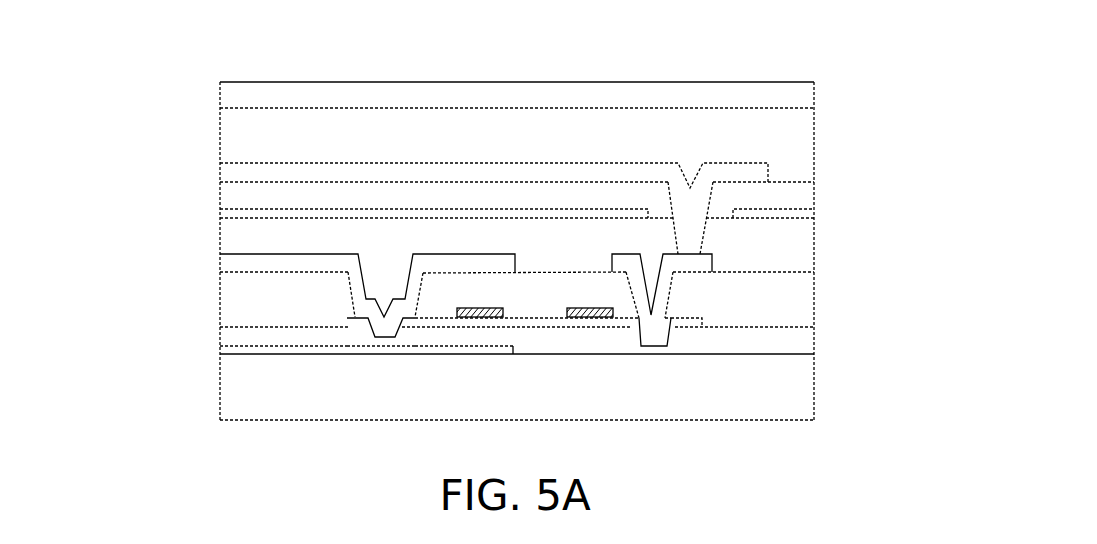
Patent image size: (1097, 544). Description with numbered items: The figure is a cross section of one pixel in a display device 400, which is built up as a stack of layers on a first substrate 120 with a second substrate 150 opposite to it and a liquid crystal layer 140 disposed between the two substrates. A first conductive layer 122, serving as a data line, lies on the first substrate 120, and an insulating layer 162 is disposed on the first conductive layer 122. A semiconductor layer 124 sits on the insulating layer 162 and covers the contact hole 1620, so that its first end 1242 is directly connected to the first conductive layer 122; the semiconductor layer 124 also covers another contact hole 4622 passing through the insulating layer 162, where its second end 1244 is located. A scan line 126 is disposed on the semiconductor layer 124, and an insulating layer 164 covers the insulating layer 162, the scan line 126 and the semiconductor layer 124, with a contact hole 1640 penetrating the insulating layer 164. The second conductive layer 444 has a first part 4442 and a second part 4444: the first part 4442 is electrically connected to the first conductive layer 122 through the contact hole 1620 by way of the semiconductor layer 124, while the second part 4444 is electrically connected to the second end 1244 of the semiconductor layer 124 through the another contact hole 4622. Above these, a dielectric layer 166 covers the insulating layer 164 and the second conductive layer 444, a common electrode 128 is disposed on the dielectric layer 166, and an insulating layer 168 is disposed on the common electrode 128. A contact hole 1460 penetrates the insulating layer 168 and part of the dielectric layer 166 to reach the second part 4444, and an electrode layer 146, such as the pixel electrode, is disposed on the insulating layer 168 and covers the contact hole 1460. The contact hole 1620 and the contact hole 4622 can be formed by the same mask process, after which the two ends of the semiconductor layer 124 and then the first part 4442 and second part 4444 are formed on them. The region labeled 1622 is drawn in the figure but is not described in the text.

The display device 400 is at (141, 35).
The second conductive layer 444 is at (643, 46).
The first part of the second conductive layer 4442 is at (493, 263).
The second part of the second conductive layer 4444 is at (673, 263).
The second substrate 150 is at (228, 99).
The liquid crystal layer 140 is at (220, 140).
The electrode layer 146 is at (228, 173).
The insulating layer 168 is at (228, 198).
The common electrode 128 is at (225, 212).
The dielectric layer 166 is at (235, 247).
The insulating layer 164 is at (228, 308).
The insulating layer 162 is at (228, 338).
The first conductive layer 122 is at (227, 353).
The first substrate 120 is at (237, 384).
The contact hole 1460 is at (721, 188).
The another contact hole 4622 is at (687, 295).
The semiconductor layer 124 is at (703, 320).
The second end of the semiconductor layer 1244 is at (720, 315).
The contact hole 1640 is at (339, 294).
The contact hole 1620 is at (350, 330).
The first end of the semiconductor layer 1242 is at (381, 355).
The scan line 126 is at (503, 317).
The doped region of semiconductor layer 1622 is at (687, 336).